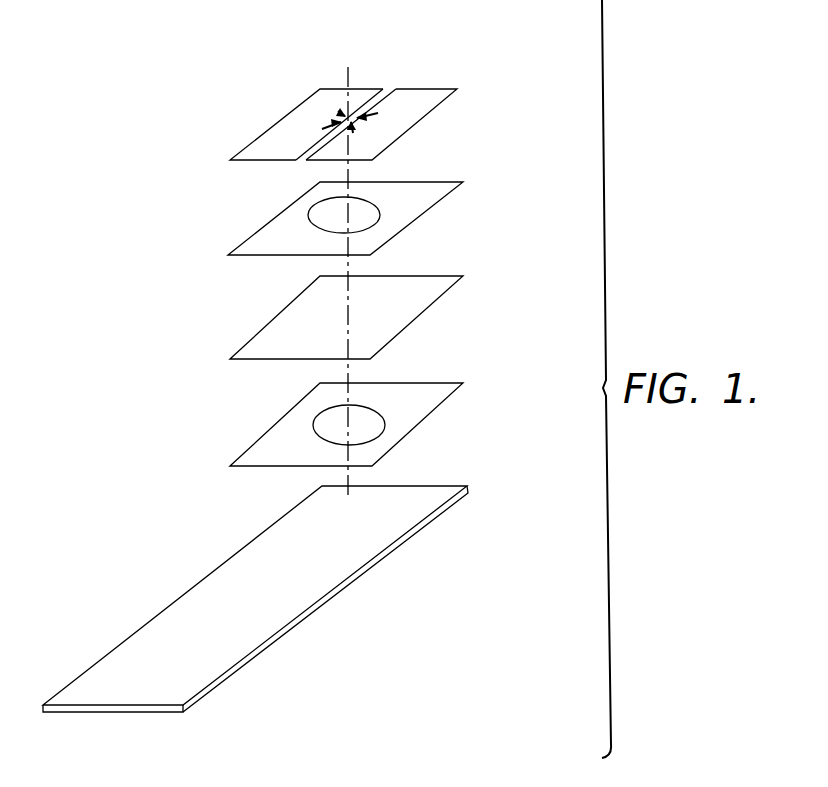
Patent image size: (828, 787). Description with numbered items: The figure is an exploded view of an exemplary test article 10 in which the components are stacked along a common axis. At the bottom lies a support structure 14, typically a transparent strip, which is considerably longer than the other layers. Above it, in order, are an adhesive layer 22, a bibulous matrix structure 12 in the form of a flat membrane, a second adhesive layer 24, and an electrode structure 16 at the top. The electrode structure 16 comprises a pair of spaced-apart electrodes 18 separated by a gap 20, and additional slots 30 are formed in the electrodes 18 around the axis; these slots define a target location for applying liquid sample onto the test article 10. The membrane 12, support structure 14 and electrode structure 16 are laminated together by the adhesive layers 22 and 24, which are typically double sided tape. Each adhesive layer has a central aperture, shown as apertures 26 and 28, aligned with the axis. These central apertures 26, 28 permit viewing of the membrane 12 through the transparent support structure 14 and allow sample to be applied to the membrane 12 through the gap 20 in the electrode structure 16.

The test article 10 is at (524, 28).
The bibulous matrix structure 12 is at (418, 315).
The support structure 14 is at (398, 550).
The electrode structure 16 is at (413, 132).
The electrodes 18 is at (313, 128).
The gap 20 is at (298, 163).
The adhesive layer 22 is at (412, 436).
The adhesive layer 24 is at (418, 215).
The central aperture 26 is at (312, 428).
The central aperture 28 is at (308, 218).
The slots 30 is at (338, 111).